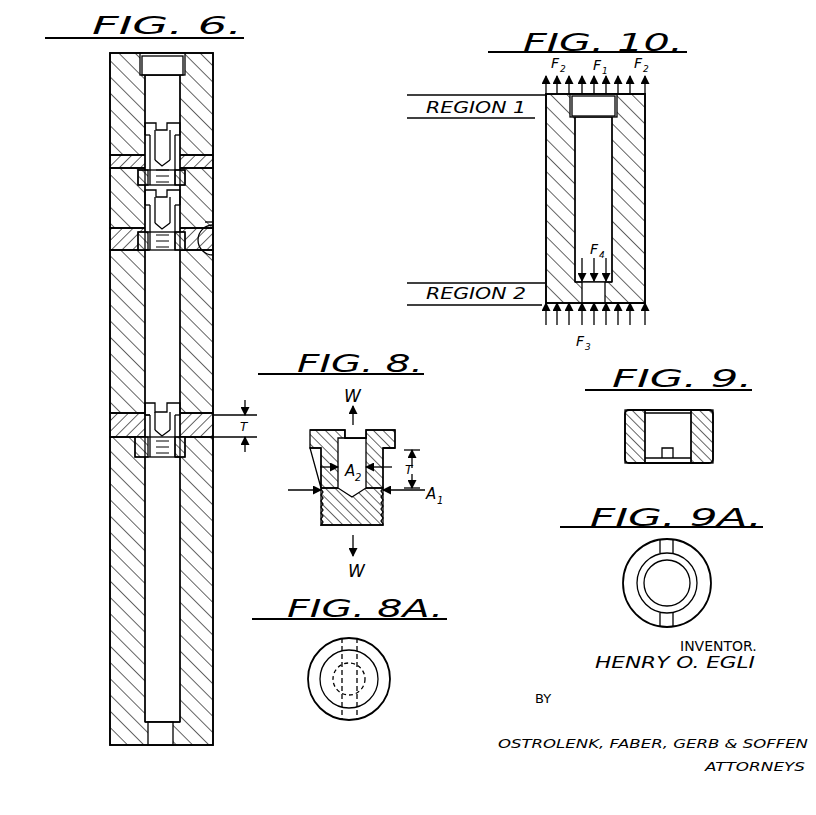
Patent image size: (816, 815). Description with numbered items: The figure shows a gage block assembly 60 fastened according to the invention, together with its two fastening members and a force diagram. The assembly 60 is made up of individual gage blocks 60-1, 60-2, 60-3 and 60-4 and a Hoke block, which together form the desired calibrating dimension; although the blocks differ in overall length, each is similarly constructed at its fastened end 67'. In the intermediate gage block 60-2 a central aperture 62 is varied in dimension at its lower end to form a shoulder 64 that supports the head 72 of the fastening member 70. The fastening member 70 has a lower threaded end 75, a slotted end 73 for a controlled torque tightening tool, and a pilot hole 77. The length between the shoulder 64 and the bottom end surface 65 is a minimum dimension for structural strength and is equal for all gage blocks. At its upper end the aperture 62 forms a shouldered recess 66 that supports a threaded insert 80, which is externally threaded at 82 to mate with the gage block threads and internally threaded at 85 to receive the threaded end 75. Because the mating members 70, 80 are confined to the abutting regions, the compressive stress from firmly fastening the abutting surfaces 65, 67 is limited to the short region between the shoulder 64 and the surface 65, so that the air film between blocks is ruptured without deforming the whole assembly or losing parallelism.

In FIG. 6, the gage block assembly 60 is at (156, 410).
In FIG. 6, the gage block 60-1 is at (118, 606).
In FIG. 6, the gage block 60-2 is at (125, 372).
In FIG. 10, the gage block 60-2 is at (635, 229).
In FIG. 6, the gage block 60-3 is at (118, 206).
In FIG. 6, the gage block 60-4 is at (125, 105).
In FIG. 6, the central aperture 62 is at (155, 305).
In FIG. 6, the shoulder 64 is at (148, 415).
In FIG. 10, the shoulder 64 is at (609, 279).
In FIG. 6, the bottom end surface 65 is at (112, 160).
In FIG. 6, the shouldered recess 66 is at (140, 252).
In FIG. 6, the abutting surface 67 is at (150, 352).
In FIG. 10, the abutting surface 67 is at (648, 83).
In FIG. 6, the fastened end 67' is at (233, 220).
In FIG. 10, the fastened end 67' is at (649, 310).
In FIG. 6, the fastening member 70 is at (146, 317).
In FIG. 8, the fastening member 70 is at (348, 460).
In FIG. 8A, the fastening member 70 is at (371, 690).
In FIG. 6, the head 72 is at (172, 403).
In FIG. 8, the head 72 is at (317, 440).
In FIG. 8A, the head 72 is at (386, 679).
In FIG. 6, the slotted end 73 is at (160, 402).
In FIG. 8, the slotted end 73 is at (356, 428).
In FIG. 8A, the slotted end 73 is at (350, 720).
In FIG. 6, the threaded end 75 is at (149, 460).
In FIG. 8, the threaded end 75 is at (368, 512).
In FIG. 6, the pilot hole 77 is at (183, 413).
In FIG. 8, the pilot hole 77 is at (353, 450).
In FIG. 6, the threaded insert 80 is at (138, 238).
In FIG. 9, the threaded insert 80 is at (657, 449).
In FIG. 9A, the threaded insert 80 is at (696, 583).
In FIG. 9, the external threads 82 is at (712, 425).
In FIG. 9A, the external threads 82 is at (708, 605).
In FIG. 6, the internal threads 85 is at (174, 458).
In FIG. 9, the internal threads 85 is at (674, 460).
In FIG. 9A, the internal threads 85 is at (686, 577).